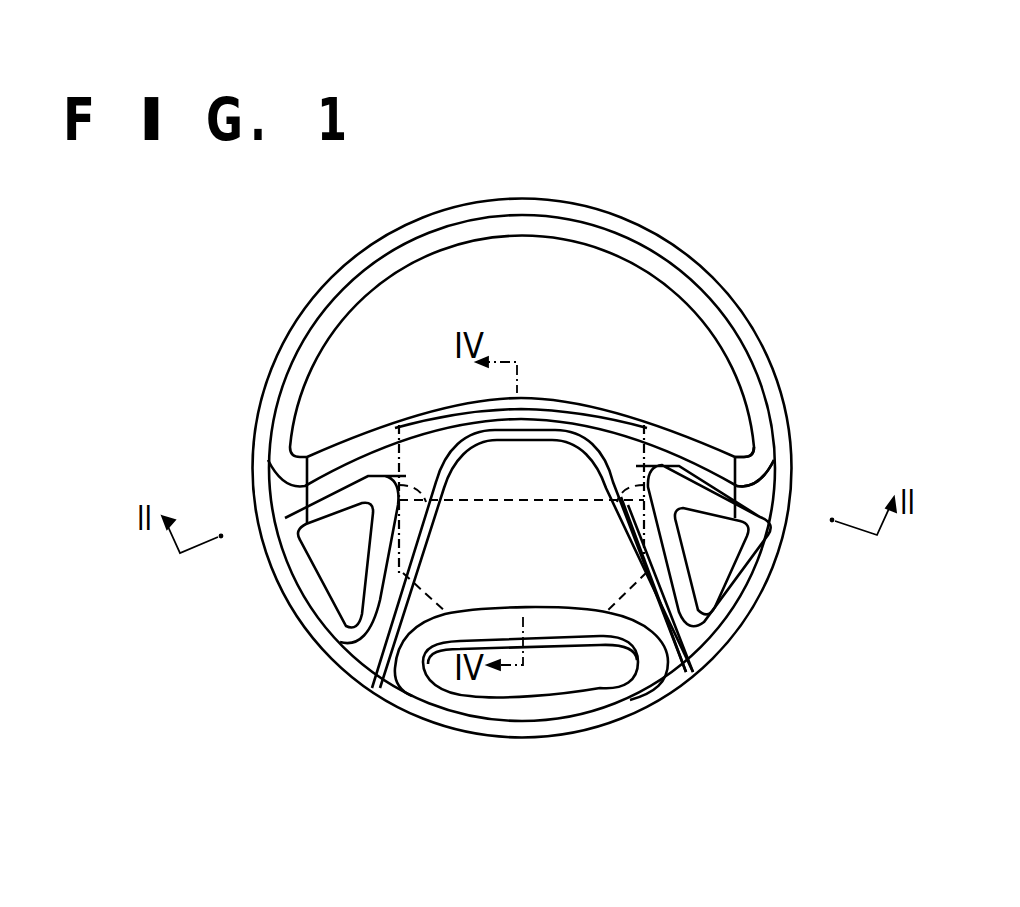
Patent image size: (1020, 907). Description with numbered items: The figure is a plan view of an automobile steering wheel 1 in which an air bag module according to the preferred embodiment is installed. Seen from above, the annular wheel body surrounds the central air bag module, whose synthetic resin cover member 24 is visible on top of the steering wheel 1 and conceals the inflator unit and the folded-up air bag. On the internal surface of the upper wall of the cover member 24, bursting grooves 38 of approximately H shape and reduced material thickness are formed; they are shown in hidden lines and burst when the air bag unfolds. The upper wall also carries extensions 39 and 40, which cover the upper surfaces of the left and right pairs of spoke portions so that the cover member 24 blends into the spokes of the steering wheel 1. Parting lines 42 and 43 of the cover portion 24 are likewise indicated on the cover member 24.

The steering wheel 1 is at (647, 186).
The cover member 24 is at (603, 404).
The bursting grooves 38 is at (471, 505).
The extension 39 is at (717, 447).
The extension 40 is at (693, 625).
The parting line 42 is at (737, 474).
The parting line 43 is at (690, 642).